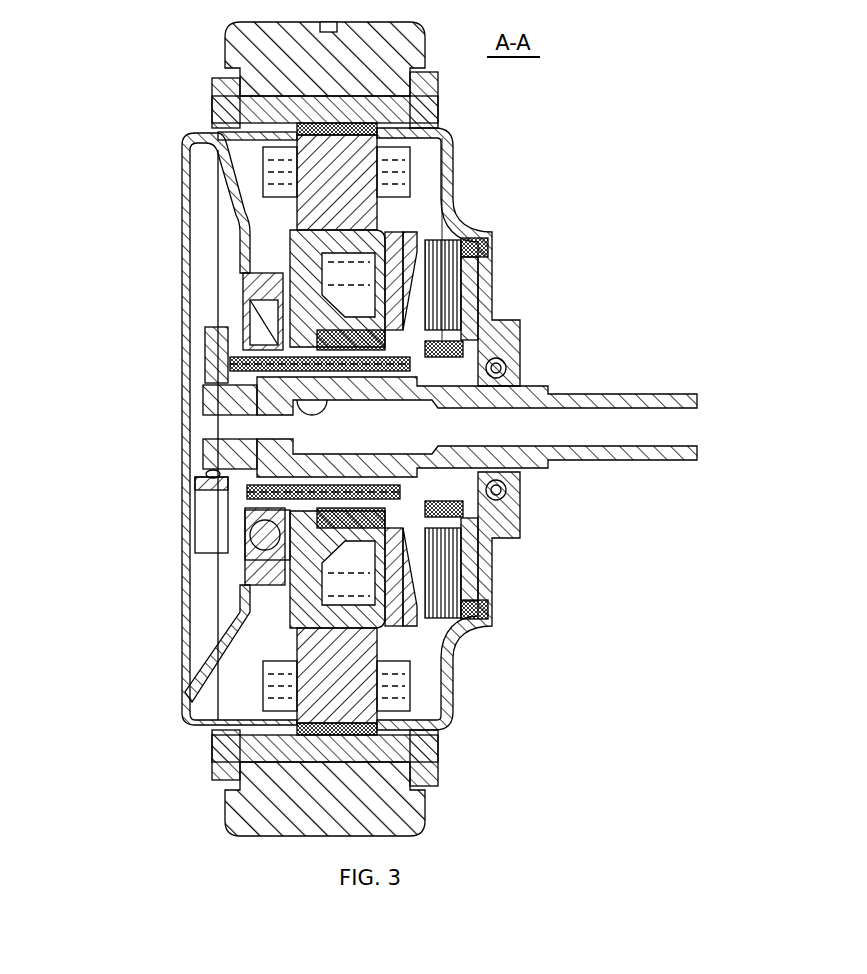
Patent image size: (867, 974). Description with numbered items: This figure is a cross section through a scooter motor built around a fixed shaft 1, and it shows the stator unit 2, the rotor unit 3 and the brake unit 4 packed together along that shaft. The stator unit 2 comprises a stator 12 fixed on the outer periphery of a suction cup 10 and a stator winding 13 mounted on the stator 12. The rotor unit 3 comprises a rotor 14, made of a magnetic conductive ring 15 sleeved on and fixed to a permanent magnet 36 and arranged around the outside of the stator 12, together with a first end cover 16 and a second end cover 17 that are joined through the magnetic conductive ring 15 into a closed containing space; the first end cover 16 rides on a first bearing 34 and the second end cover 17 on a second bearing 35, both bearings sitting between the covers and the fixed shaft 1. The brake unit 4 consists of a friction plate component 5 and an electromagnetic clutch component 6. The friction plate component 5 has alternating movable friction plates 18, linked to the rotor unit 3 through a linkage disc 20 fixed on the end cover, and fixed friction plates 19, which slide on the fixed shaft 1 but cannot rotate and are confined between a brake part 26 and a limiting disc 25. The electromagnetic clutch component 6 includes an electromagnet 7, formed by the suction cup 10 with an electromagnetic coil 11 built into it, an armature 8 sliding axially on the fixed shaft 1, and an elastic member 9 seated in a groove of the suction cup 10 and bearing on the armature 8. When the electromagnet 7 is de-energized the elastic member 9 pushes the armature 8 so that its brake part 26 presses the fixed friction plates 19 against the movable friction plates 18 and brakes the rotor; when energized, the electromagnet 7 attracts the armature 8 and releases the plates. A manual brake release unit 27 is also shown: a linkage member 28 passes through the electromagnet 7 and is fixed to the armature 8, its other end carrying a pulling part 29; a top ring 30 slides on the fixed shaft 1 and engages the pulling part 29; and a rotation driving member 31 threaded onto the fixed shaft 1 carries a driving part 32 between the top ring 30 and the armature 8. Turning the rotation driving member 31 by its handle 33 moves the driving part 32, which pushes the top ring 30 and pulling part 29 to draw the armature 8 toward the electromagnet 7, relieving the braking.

The fixed shaft 1 is at (596, 432).
The stator unit 2 is at (246, 429).
The rotor unit 3 is at (241, 429).
The brake unit 4 is at (487, 366).
The friction plate component 5 is at (531, 420).
The electromagnetic clutch component 6 is at (464, 366).
The electromagnet 7 is at (442, 366).
The armature 8 is at (445, 300).
The elastic member 9 is at (478, 300).
The suction cup 10 is at (400, 235).
The electromagnetic coil 11 is at (395, 270).
The stator 12 is at (327, 673).
The stator winding 13 is at (277, 685).
The rotor 14 is at (261, 421).
The magnetic conductive ring 15 is at (335, 108).
The first end cover 16 is at (232, 222).
The second end cover 17 is at (385, 114).
The movable friction plate 18 is at (443, 320).
The fixed friction plate 19 is at (440, 358).
The linkage disc 20 is at (447, 630).
The limiting disc 25 is at (470, 550).
The brake part 26 is at (475, 607).
The manual brake release unit 27 is at (242, 424).
The linkage member 28 is at (290, 330).
The pulling part 29 is at (215, 520).
The top ring 30 is at (262, 340).
The rotation driving member 31 is at (232, 370).
The driving part 32 is at (240, 418).
The handle 33 is at (212, 522).
The first bearing 34 is at (255, 539).
The second bearing 35 is at (500, 497).
The permanent magnet 36 is at (310, 126).